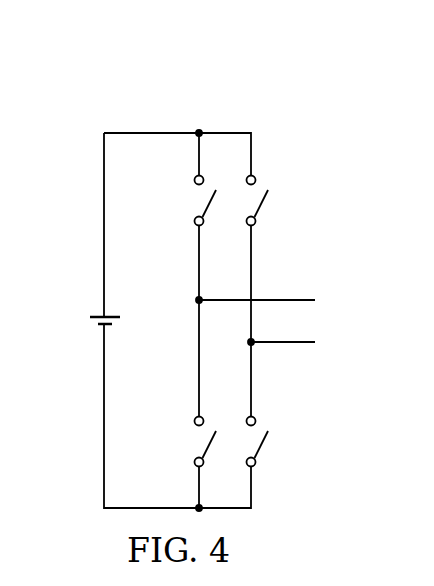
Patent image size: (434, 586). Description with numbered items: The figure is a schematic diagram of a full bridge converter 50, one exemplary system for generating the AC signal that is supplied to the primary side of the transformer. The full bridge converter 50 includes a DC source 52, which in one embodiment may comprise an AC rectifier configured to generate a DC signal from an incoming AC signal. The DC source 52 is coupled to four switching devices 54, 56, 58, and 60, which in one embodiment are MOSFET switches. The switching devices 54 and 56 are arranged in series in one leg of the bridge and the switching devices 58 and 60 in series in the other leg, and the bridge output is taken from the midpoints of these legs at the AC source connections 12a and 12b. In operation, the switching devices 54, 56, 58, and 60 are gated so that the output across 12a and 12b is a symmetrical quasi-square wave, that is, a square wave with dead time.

The full bridge converter 50 is at (141, 91).
The DC source 52 is at (90, 318).
The switching device 54 is at (205, 207).
The switching device 56 is at (206, 448).
The switching device 58 is at (262, 203).
The switching device 60 is at (262, 444).
The AC source 12a is at (284, 298).
The AC source 12b is at (292, 345).